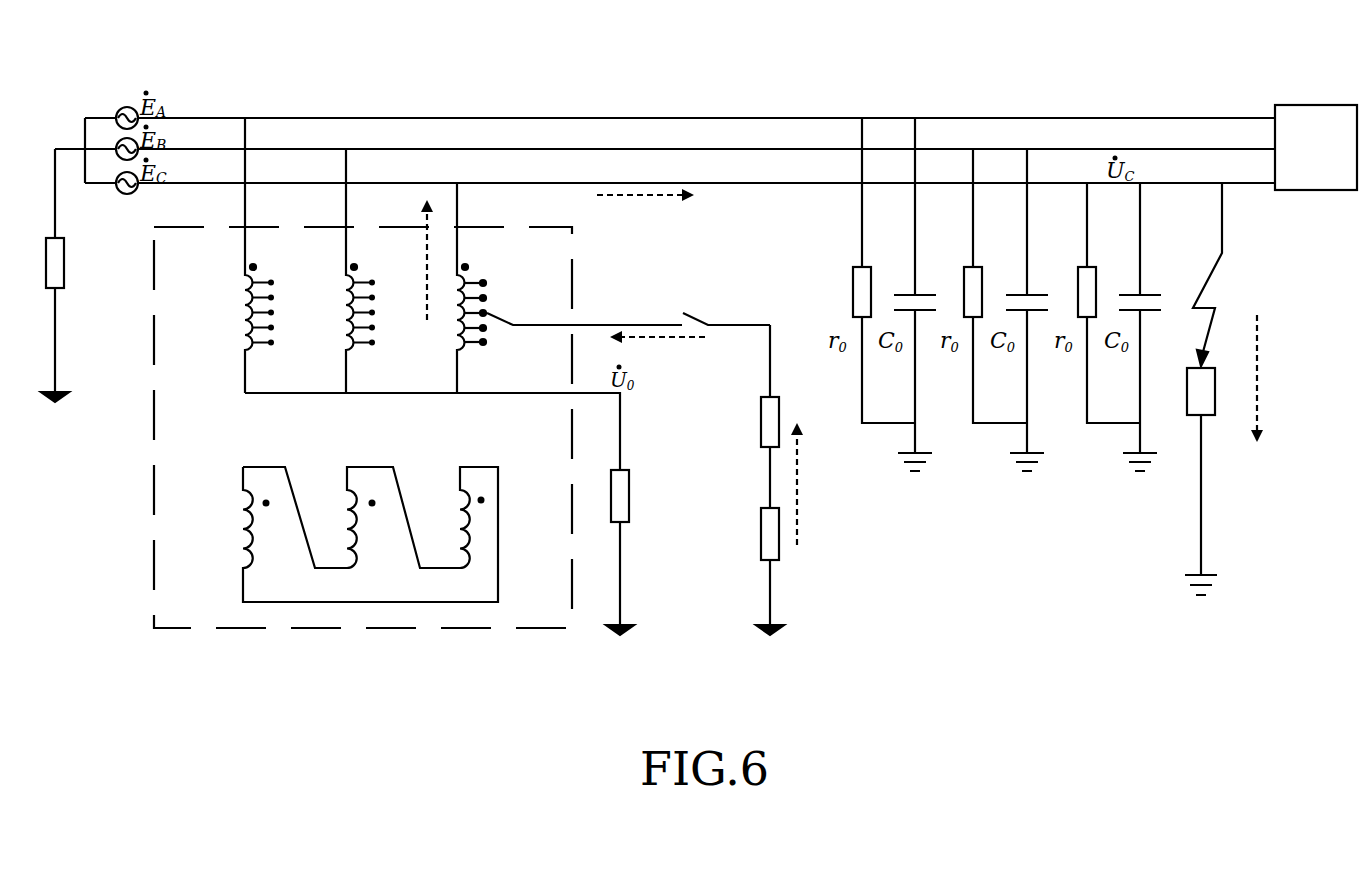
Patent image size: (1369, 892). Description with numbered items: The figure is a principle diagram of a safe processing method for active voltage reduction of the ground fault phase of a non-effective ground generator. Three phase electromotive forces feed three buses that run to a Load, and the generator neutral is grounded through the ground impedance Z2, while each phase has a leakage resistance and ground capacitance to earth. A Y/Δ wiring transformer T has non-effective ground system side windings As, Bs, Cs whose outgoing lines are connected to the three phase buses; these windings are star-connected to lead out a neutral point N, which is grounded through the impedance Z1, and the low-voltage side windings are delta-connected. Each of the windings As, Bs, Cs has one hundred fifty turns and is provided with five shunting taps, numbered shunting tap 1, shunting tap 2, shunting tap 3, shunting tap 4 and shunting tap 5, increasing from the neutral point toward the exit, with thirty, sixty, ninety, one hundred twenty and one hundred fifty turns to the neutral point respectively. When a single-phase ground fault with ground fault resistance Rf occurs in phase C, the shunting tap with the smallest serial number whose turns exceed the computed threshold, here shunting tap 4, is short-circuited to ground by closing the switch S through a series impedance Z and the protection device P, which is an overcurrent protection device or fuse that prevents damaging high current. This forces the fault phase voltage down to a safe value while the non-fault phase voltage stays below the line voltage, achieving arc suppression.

The shunting tap 1 is at (483, 345).
The shunting tap 2 is at (483, 330).
The shunting tap 3 is at (483, 315).
The shunting tap 4 is at (483, 301).
The shunting tap 5 is at (483, 286).
The impedance Z1 is at (634, 552).
The ground impedance of the neutral point Z2 is at (70, 275).
The series impedance Z is at (754, 416).
The protection device P is at (756, 571).
The switch S is at (726, 300).
The grounding transformer T is at (359, 515).
The neutral point N is at (602, 431).
The ground fault resistance Rf is at (1216, 388).
The load Load is at (1316, 147).
The non-effective ground system side winding As is at (240, 255).
The non-effective ground system side winding Bs is at (345, 271).
The non-effective ground system side winding Cs is at (464, 288).